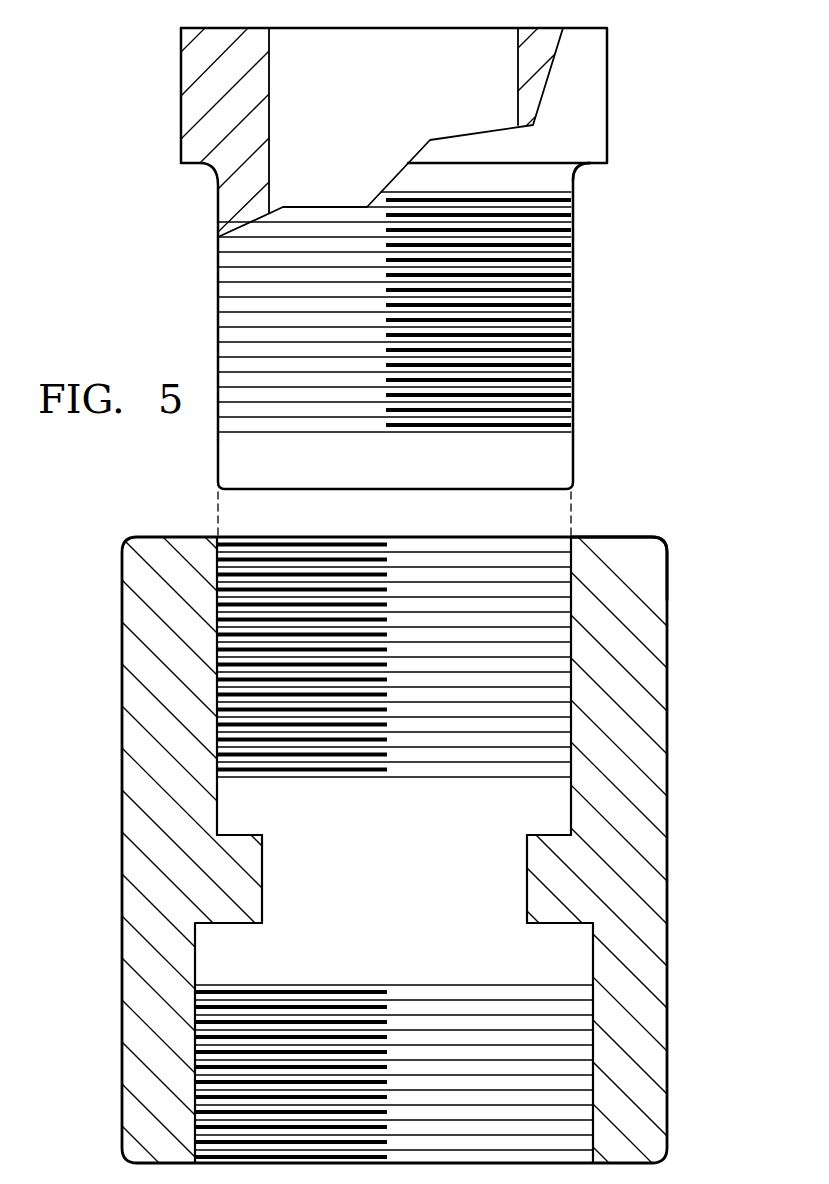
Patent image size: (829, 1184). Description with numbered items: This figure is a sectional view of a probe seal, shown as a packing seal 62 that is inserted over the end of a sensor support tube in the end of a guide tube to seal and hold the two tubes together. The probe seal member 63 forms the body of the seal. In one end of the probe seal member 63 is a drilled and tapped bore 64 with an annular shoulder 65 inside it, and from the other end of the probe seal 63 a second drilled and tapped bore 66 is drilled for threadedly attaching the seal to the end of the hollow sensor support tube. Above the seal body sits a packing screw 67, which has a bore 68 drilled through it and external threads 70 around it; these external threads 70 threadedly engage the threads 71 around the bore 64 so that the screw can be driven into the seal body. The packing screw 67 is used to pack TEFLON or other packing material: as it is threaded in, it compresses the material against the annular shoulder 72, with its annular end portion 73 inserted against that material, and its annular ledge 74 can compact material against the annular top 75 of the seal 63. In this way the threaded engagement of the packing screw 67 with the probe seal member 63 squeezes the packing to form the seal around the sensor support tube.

The packing seal 62 is at (680, 410).
The probe seal member 63 is at (653, 667).
The drilled and tapped bore 64 is at (555, 723).
The annular shoulder 65 is at (512, 878).
The drilled and tapped bore 66 is at (591, 1037).
The packing screw 67 is at (607, 110).
The bore 68 is at (487, 43).
The external threads 70 is at (573, 254).
The threads 71 is at (550, 577).
The annular shoulder 72 is at (558, 832).
The annular end portion 73 is at (541, 497).
The annular ledge 74 is at (593, 165).
The annular top 75 is at (658, 537).